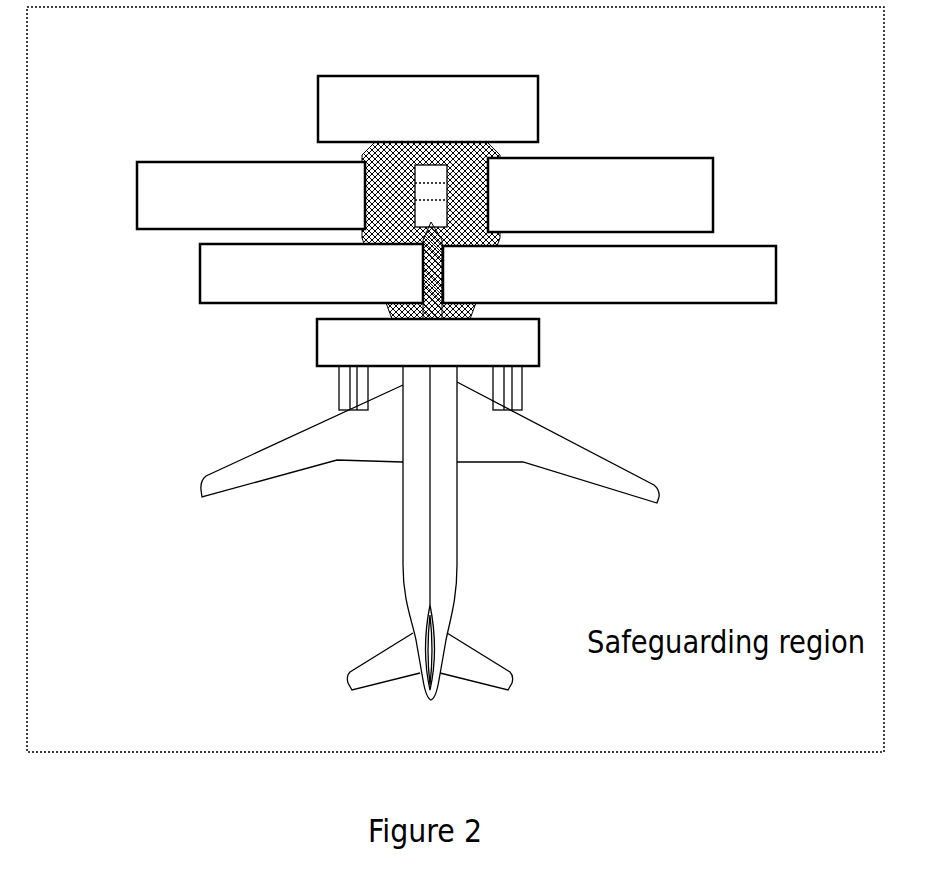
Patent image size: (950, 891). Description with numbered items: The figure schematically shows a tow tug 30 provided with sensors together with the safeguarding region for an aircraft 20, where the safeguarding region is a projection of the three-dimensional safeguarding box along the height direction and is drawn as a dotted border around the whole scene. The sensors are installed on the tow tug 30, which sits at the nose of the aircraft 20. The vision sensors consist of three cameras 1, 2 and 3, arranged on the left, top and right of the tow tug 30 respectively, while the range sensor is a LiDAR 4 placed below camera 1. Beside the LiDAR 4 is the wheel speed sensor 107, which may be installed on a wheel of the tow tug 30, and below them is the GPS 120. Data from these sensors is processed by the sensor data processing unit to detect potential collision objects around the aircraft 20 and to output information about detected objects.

The camera 1 is at (251, 195).
The camera 2 is at (428, 109).
The camera 3 is at (600, 195).
The LiDAR 4 is at (311, 273).
The wheel speed sensor 107 is at (609, 274).
The GPS 120 is at (428, 342).
The tow tug 30 is at (560, 136).
The aircraft 20 is at (340, 511).